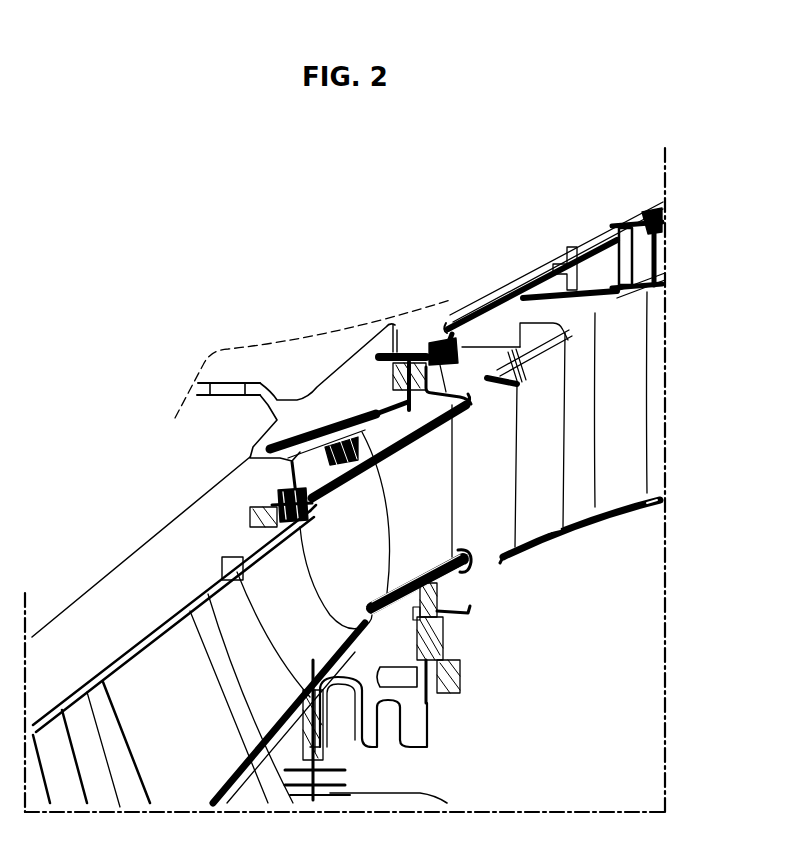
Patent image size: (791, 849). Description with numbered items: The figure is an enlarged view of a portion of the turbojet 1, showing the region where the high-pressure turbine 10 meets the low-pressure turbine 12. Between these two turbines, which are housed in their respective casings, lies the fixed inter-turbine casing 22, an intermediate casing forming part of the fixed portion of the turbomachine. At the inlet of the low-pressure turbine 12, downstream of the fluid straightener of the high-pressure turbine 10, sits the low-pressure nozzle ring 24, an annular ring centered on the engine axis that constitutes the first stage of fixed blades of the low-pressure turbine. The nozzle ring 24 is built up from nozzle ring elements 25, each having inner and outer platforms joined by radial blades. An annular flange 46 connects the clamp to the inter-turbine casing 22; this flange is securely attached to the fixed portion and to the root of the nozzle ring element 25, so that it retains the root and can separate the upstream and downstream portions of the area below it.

The turbojet engine assembly 1 is at (718, 372).
The high-pressure turbine 10 is at (303, 615).
The low-pressure turbine 12 is at (635, 414).
The inter-turbine casing 22 is at (270, 408).
The low-pressure nozzle ring 24 is at (415, 460).
The nozzle ring element 25 is at (432, 514).
The annular flange 46 is at (432, 752).